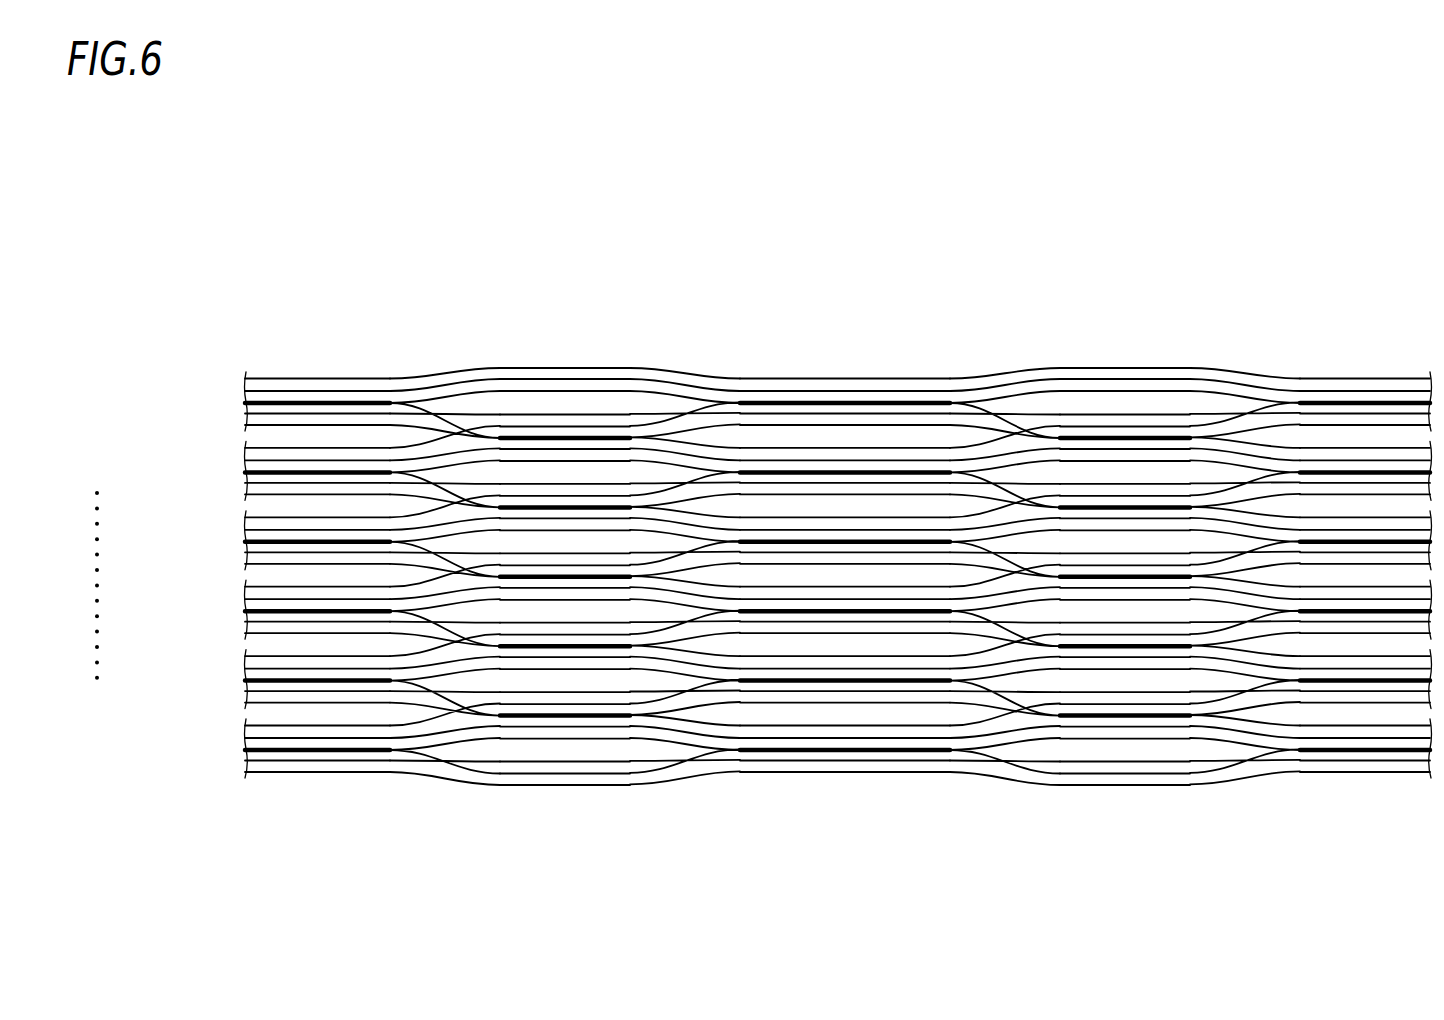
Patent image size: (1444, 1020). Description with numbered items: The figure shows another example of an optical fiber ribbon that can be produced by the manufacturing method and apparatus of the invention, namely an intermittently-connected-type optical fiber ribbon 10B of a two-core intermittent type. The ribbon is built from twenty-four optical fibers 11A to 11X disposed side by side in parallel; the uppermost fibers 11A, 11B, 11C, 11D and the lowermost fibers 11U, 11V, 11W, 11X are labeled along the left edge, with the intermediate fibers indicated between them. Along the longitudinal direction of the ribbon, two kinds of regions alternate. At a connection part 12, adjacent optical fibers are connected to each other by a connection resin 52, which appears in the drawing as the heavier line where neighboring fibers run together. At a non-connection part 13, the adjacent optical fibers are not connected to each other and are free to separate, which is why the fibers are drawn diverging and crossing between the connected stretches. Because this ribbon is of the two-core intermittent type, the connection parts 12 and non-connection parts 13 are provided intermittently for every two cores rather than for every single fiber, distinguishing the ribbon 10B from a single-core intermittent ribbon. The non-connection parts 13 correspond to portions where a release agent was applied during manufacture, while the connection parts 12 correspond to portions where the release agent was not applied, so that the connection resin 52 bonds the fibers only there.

The intermittently-connected-type optical fiber ribbon 10B is at (921, 254).
The optical fiber 11A is at (245, 378).
The optical fiber 11B is at (245, 395).
The optical fiber 11C is at (245, 418).
The optical fiber 11D is at (247, 427).
The optical fiber 11U is at (243, 733).
The optical fiber 11V is at (243, 745).
The optical fiber 11W is at (243, 755).
The optical fiber 11X is at (245, 765).
The connection part 12 is at (308, 777).
The connection resin 52 is at (342, 752).
The non-connection part 13 is at (777, 723).